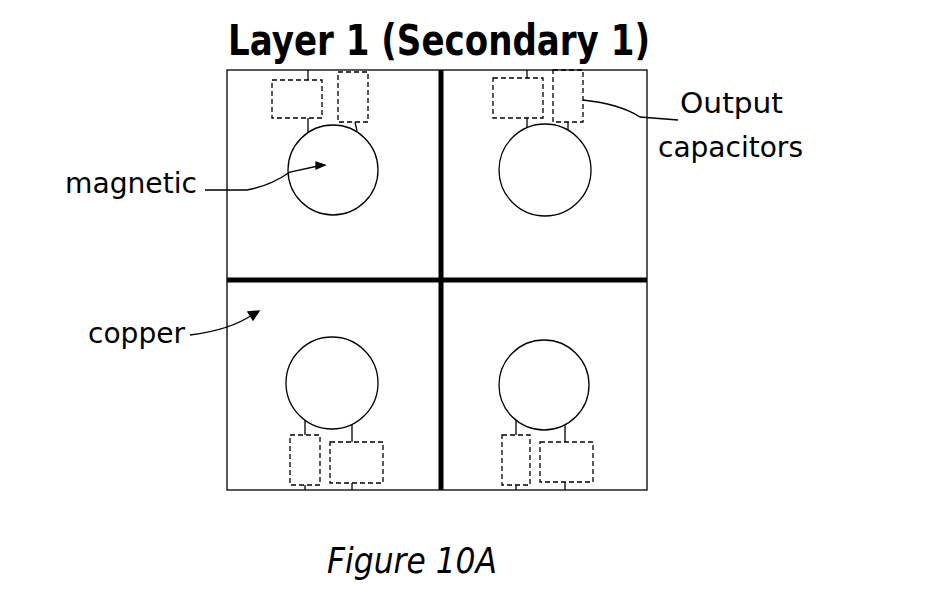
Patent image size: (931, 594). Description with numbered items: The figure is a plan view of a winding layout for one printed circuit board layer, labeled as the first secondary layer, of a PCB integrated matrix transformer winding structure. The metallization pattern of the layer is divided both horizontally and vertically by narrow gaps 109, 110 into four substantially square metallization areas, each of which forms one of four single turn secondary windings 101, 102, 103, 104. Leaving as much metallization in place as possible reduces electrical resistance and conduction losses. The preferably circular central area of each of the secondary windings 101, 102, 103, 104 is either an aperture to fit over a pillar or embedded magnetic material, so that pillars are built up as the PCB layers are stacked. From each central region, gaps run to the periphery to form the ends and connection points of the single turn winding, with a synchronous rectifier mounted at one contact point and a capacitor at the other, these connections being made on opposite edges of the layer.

The single turn secondary winding 101 is at (243, 230).
The single turn secondary winding 102 is at (620, 233).
The single turn secondary winding 103 is at (253, 417).
The single turn secondary winding 104 is at (622, 398).
The narrow gap 109 is at (583, 285).
The narrow gap 110 is at (433, 228).